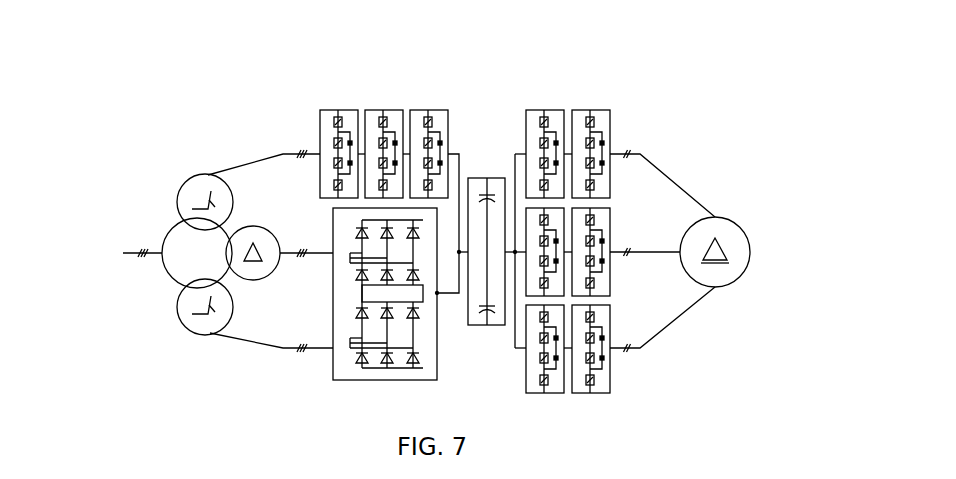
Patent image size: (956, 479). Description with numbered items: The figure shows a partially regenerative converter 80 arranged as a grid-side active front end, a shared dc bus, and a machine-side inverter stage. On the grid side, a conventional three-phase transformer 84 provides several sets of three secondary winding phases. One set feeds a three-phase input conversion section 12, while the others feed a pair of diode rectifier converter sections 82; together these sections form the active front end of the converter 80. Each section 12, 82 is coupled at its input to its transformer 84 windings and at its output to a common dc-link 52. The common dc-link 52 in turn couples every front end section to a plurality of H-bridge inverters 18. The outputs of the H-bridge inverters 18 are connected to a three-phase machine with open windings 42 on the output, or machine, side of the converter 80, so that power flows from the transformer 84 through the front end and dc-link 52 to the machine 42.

The partially regenerative converter 80 is at (473, 72).
The three-phase transformer 84 is at (178, 175).
The three-phase input conversion section 12 is at (348, 103).
The diode rectifier converter section 82 is at (322, 380).
The common dc-link 52 is at (489, 170).
The H-bridge inverters 18 is at (598, 104).
The three-phase machine with open windings 42 is at (740, 216).